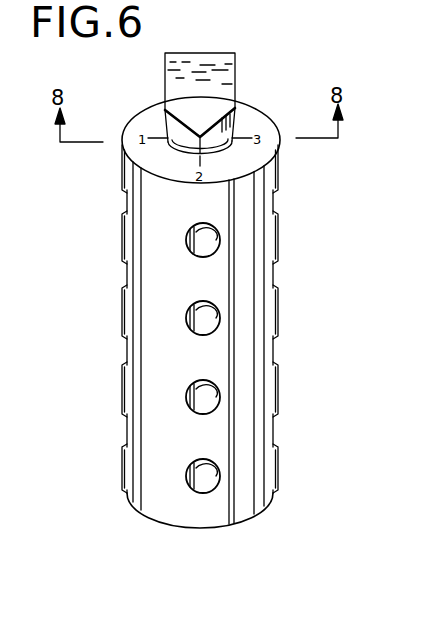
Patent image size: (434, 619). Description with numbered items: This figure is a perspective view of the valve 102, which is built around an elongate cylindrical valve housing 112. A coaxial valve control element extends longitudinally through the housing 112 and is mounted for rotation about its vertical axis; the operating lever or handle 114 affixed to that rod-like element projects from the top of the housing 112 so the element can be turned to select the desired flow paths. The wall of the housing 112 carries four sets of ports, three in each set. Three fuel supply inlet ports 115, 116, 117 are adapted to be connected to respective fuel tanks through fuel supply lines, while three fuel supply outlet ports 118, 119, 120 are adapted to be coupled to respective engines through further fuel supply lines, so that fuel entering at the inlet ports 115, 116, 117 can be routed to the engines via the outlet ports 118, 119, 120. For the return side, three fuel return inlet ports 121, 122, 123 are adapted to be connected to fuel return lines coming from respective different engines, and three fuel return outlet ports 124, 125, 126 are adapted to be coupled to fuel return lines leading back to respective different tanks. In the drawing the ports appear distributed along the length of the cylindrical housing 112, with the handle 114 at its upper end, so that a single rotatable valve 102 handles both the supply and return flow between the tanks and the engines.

The valve 102 is at (257, 107).
The valve housing 112 is at (172, 515).
The operating lever or handle 114 is at (217, 62).
The fuel supply inlet port 115 is at (125, 187).
The fuel supply inlet port 116 is at (204, 232).
The fuel supply inlet port 117 is at (278, 198).
The fuel supply outlet port 118 is at (125, 266).
The fuel supply outlet port 119 is at (204, 310).
The fuel supply outlet port 120 is at (278, 274).
The fuel return inlet port 121 is at (125, 344).
The fuel return inlet port 122 is at (205, 389).
The fuel return inlet port 123 is at (280, 357).
The fuel return outlet port 124 is at (125, 420).
The fuel return outlet port 125 is at (207, 468).
The fuel return outlet port 126 is at (280, 438).